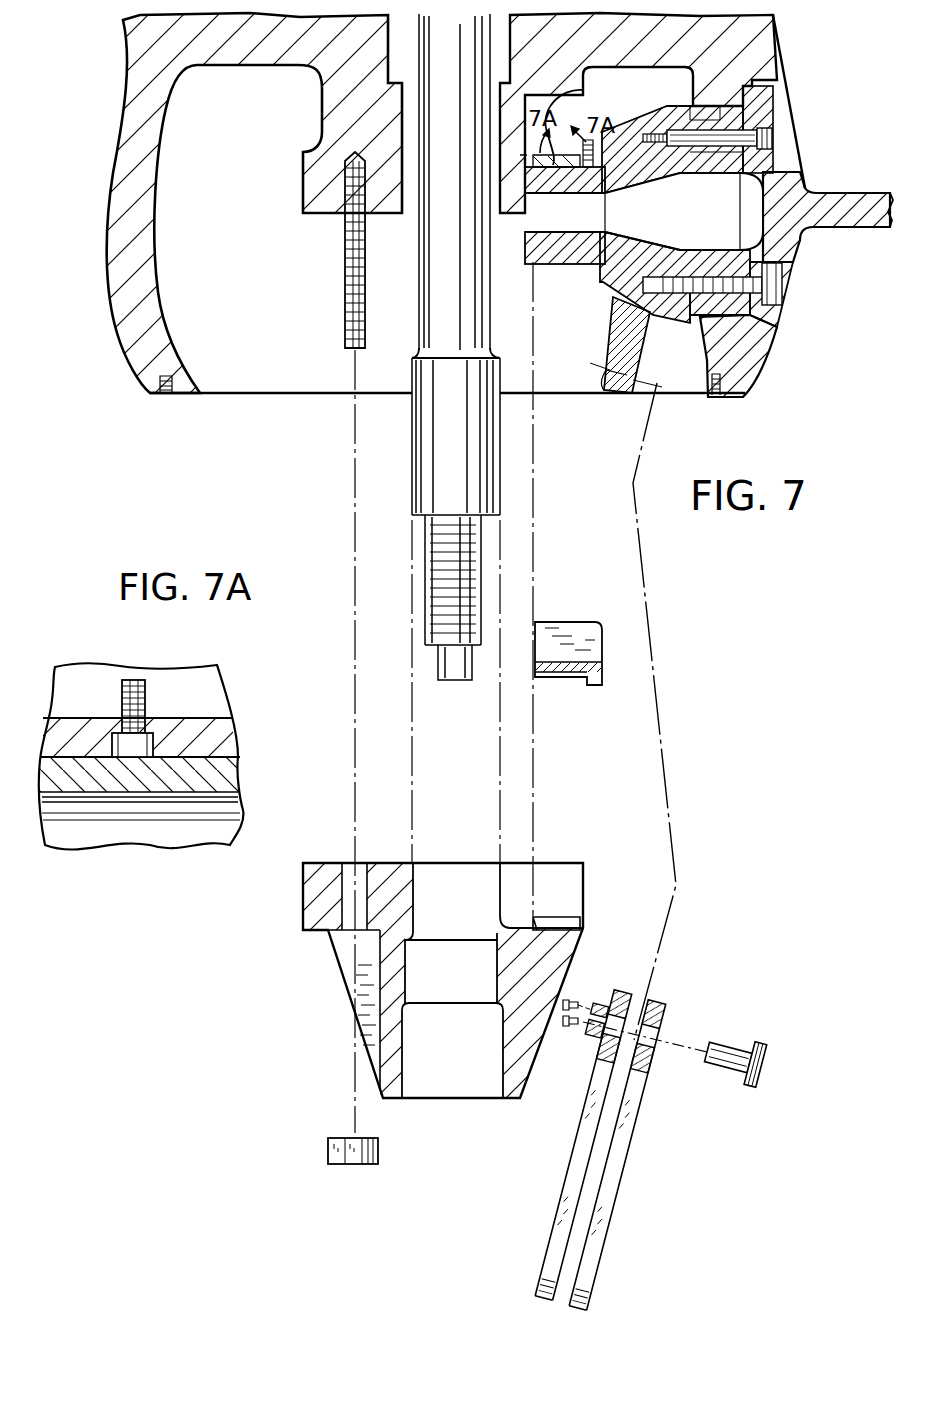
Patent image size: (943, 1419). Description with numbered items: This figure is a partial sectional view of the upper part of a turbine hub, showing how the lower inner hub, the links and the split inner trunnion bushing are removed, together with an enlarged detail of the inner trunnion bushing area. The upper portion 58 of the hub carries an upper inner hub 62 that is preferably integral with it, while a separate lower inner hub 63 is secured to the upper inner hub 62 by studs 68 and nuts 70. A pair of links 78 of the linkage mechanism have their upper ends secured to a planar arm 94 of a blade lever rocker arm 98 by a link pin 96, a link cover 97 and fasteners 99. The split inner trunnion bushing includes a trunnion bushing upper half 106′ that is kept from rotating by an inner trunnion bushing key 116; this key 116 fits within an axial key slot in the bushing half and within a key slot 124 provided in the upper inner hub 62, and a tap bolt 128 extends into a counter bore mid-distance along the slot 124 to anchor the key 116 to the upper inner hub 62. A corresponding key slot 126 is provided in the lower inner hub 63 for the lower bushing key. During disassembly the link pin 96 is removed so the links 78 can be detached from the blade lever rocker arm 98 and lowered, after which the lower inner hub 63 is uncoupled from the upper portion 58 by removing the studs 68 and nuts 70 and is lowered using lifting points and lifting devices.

In FIG. 7, the upper portion 58 is at (104, 278).
In FIG. 7A, the upper portion 58 is at (185, 682).
In FIG. 7, the upper inner hub 62 is at (302, 168).
In FIG. 7, the studs 68 is at (343, 293).
In FIG. 7, the trunnion bushing upper half 106′ is at (583, 90).
In FIG. 7A, the trunnion bushing upper half 106′ is at (230, 779).
In FIG. 7, the key slot 124 is at (538, 172).
In FIG. 7A, the key slot 124 is at (48, 756).
In FIG. 7, the blade lever rocker arm 98 is at (600, 284).
In FIG. 7, the planar arm 94 is at (603, 387).
In FIG. 7, the key slot 126 is at (560, 920).
In FIG. 7, the lower inner hub 63 is at (340, 987).
In FIG. 7, the fasteners 99 is at (562, 1012).
In FIG. 7, the link cover 97 is at (597, 1042).
In FIG. 7, the links 78 is at (590, 1166).
In FIG. 7, the link pin 96 is at (770, 1068).
In FIG. 7, the nuts 70 is at (327, 1152).
In FIG. 7A, the tap bolt 128 is at (122, 693).
In FIG. 7A, the inner trunnion bushing key 116 is at (222, 736).